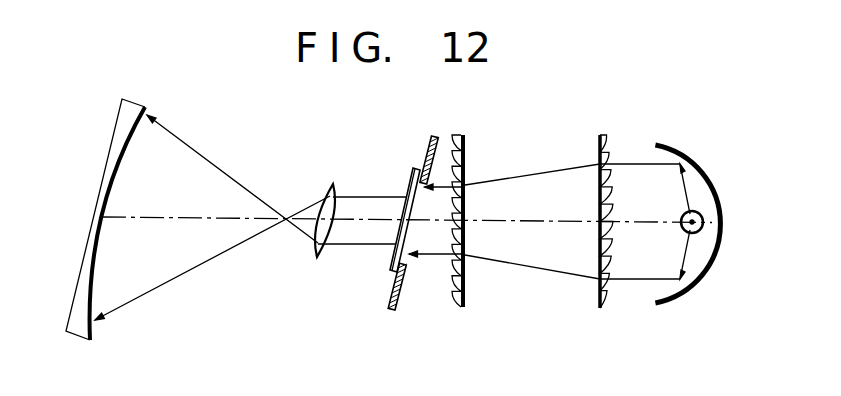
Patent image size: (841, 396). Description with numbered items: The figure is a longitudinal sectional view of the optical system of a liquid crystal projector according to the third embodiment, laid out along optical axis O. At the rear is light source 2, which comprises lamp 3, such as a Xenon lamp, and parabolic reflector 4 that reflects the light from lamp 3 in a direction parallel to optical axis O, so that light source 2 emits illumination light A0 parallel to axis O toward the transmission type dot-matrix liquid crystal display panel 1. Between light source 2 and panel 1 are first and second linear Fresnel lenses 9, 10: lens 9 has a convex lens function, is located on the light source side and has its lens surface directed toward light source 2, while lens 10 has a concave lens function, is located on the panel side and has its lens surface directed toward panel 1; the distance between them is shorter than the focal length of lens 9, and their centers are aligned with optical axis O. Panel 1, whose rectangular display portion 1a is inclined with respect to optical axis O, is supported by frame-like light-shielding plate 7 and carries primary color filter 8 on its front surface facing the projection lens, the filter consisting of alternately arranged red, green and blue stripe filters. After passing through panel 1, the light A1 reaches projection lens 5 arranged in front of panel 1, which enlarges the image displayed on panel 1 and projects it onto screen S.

The screen S is at (84, 257).
The projection lens 5 is at (330, 188).
The transmission type dot-matrix liquid crystal display panel 1 is at (403, 211).
The light-shielding plate 7 is at (434, 140).
The primary color filter 8 is at (412, 183).
The display portion 1a is at (410, 232).
The reading light A1 is at (425, 258).
The second linear Fresnel lens 10 is at (466, 300).
The first linear Fresnel lens 9 is at (600, 135).
The illumination light A0 is at (634, 160).
The light source 2 is at (688, 241).
The parabolic reflector 4 is at (707, 176).
The lamp 3 is at (686, 213).
The optical axis O is at (528, 226).